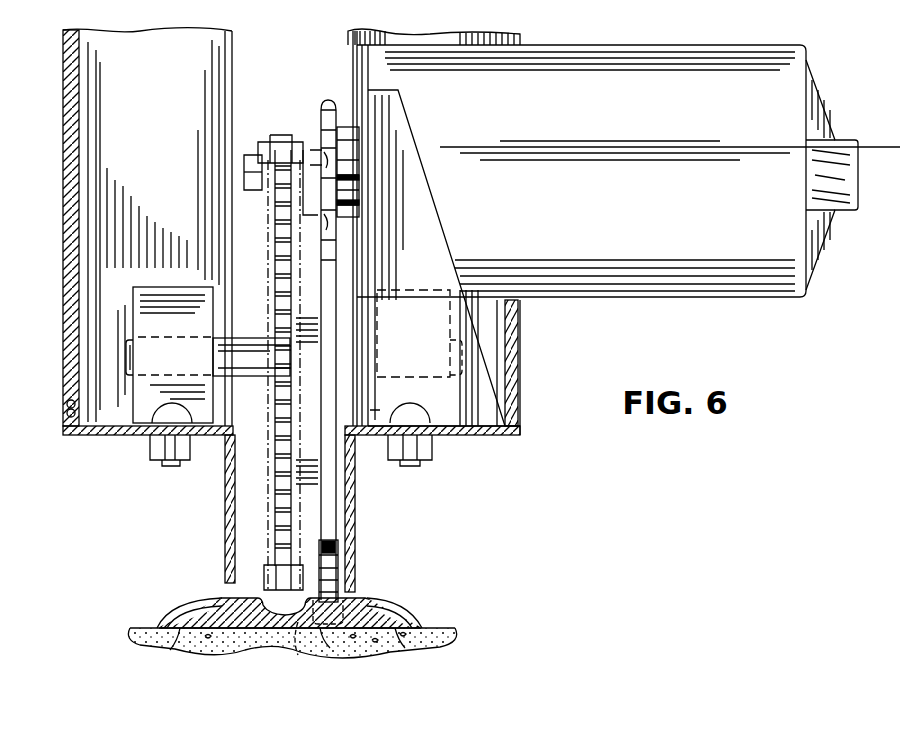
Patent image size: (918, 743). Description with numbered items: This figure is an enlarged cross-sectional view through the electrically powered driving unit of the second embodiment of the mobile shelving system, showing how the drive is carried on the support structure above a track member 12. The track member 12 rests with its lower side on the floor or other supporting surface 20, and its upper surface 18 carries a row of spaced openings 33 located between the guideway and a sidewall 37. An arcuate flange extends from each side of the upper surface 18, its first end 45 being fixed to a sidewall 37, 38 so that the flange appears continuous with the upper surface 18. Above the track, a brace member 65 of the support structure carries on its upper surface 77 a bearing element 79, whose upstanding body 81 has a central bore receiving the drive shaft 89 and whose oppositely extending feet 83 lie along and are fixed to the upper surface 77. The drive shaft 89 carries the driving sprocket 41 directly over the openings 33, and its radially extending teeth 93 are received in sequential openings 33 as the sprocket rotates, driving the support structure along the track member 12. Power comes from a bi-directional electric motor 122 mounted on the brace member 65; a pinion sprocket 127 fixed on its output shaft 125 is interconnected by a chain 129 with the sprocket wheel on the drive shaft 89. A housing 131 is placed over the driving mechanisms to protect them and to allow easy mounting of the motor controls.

The track member 12 is at (233, 644).
The upper surface 18 is at (228, 600).
The supporting surface 20 is at (437, 630).
The openings 33 is at (338, 650).
The sidewall 37 is at (405, 647).
The sidewall 38 is at (186, 645).
The driving sprocket 41 is at (340, 586).
The first end 45 is at (170, 618).
The brace member 65 is at (224, 512).
The upper surface 77 is at (82, 435).
The bearing element 79 is at (165, 300).
The upstanding body 81 is at (133, 330).
The feet 83 is at (150, 437).
The drive shaft 89 is at (250, 378).
The teeth 93 is at (300, 648).
The electric motor 122 is at (706, 298).
The output shaft 125 is at (320, 138).
The pinion sprocket 127 is at (278, 297).
The chain 129 is at (268, 143).
The housing 131 is at (72, 186).